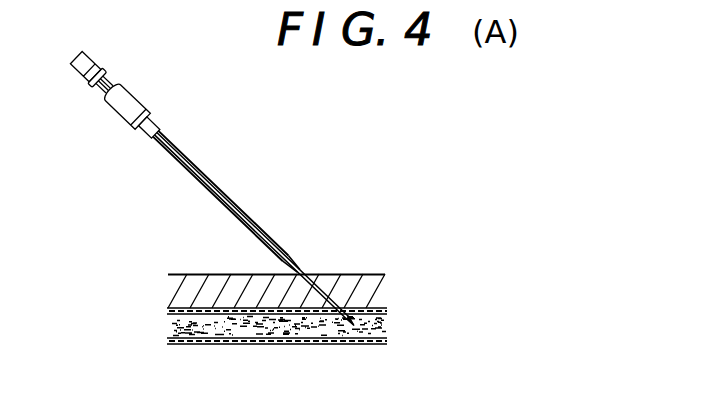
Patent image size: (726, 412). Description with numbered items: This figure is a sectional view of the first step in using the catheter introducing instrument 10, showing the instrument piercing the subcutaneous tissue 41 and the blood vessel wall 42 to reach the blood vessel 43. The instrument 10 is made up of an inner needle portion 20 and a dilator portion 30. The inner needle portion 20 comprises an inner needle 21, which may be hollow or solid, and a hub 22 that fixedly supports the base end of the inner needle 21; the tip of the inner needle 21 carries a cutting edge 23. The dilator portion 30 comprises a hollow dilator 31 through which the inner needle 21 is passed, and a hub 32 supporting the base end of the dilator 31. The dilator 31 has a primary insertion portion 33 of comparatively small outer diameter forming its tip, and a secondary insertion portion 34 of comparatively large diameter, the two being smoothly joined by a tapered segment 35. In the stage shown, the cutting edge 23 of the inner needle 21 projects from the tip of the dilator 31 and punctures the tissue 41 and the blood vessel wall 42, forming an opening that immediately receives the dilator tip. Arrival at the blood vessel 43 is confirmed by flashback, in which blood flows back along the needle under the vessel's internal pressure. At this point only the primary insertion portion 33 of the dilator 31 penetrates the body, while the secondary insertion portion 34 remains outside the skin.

The catheter introducing instrument 10 is at (226, 219).
The inner needle portion 20 is at (106, 66).
The inner needle 21 is at (349, 327).
The hub 22 is at (90, 83).
The cutting edge 23 is at (356, 322).
The dilator portion 30 is at (143, 104).
The dilator 31 is at (229, 198).
The hub 32 is at (144, 114).
The primary insertion portion 33 is at (332, 276).
The secondary insertion portion 34 is at (263, 232).
The tapered segment 35 is at (298, 267).
The subcutaneous tissue 41 is at (210, 283).
The blood vessel wall 42 is at (170, 319).
The blood vessel 43 is at (212, 325).